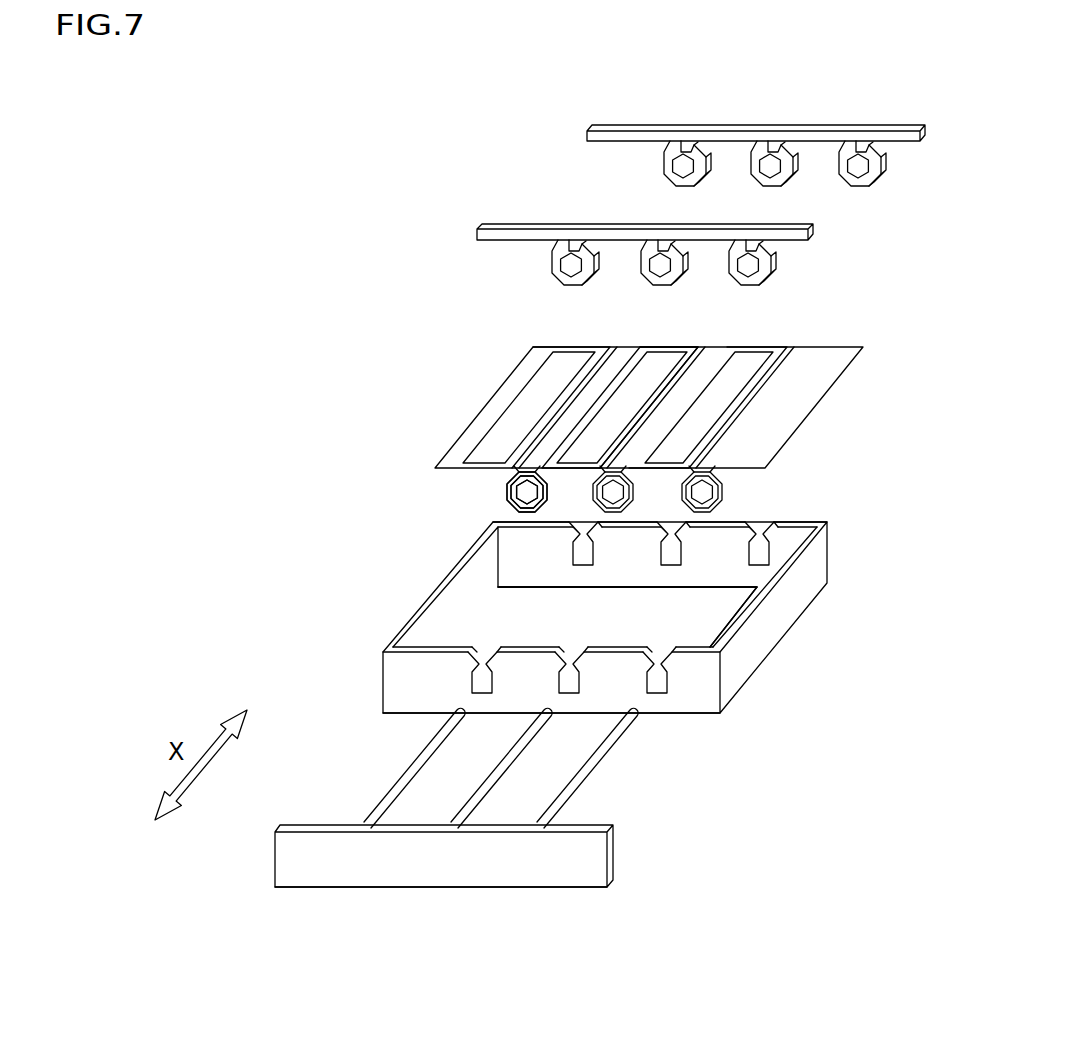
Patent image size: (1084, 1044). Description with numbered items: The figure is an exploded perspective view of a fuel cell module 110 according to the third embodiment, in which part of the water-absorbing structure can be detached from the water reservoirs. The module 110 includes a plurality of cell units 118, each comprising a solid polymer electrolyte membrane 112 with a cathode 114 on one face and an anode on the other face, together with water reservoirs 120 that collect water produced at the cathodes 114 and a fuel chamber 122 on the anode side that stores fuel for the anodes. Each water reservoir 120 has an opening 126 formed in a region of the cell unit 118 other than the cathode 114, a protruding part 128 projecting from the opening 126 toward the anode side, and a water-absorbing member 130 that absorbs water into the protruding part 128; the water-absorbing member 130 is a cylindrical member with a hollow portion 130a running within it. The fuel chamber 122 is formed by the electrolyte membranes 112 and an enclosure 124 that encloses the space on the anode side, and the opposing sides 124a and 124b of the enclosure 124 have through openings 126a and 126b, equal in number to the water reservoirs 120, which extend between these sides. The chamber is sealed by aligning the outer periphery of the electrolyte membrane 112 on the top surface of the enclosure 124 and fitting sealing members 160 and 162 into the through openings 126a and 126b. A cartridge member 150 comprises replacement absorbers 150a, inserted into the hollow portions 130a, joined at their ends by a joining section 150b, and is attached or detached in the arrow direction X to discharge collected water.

The fuel cell module 110 is at (318, 602).
The solid polymer electrolyte membrane 112 is at (785, 350).
The cathode 114 is at (756, 358).
The cell unit 118 is at (572, 347).
The water reservoir 120 is at (506, 494).
The fuel chamber 122 is at (693, 620).
The enclosure 124 is at (800, 590).
The side of enclosure 124a is at (706, 700).
The side of enclosure 124b is at (726, 537).
The opening 126 is at (505, 470).
The through opening 126a is at (656, 698).
The through opening 126b is at (764, 548).
The protruding part 128 is at (512, 504).
The water-absorbing member 130 is at (626, 350).
The hollow portion 130a is at (522, 514).
The cartridge member 150 is at (618, 853).
The replacement absorber 150a is at (403, 778).
The joining section 150b is at (445, 874).
The sealing member 160 is at (480, 229).
The sealing member 162 is at (590, 131).